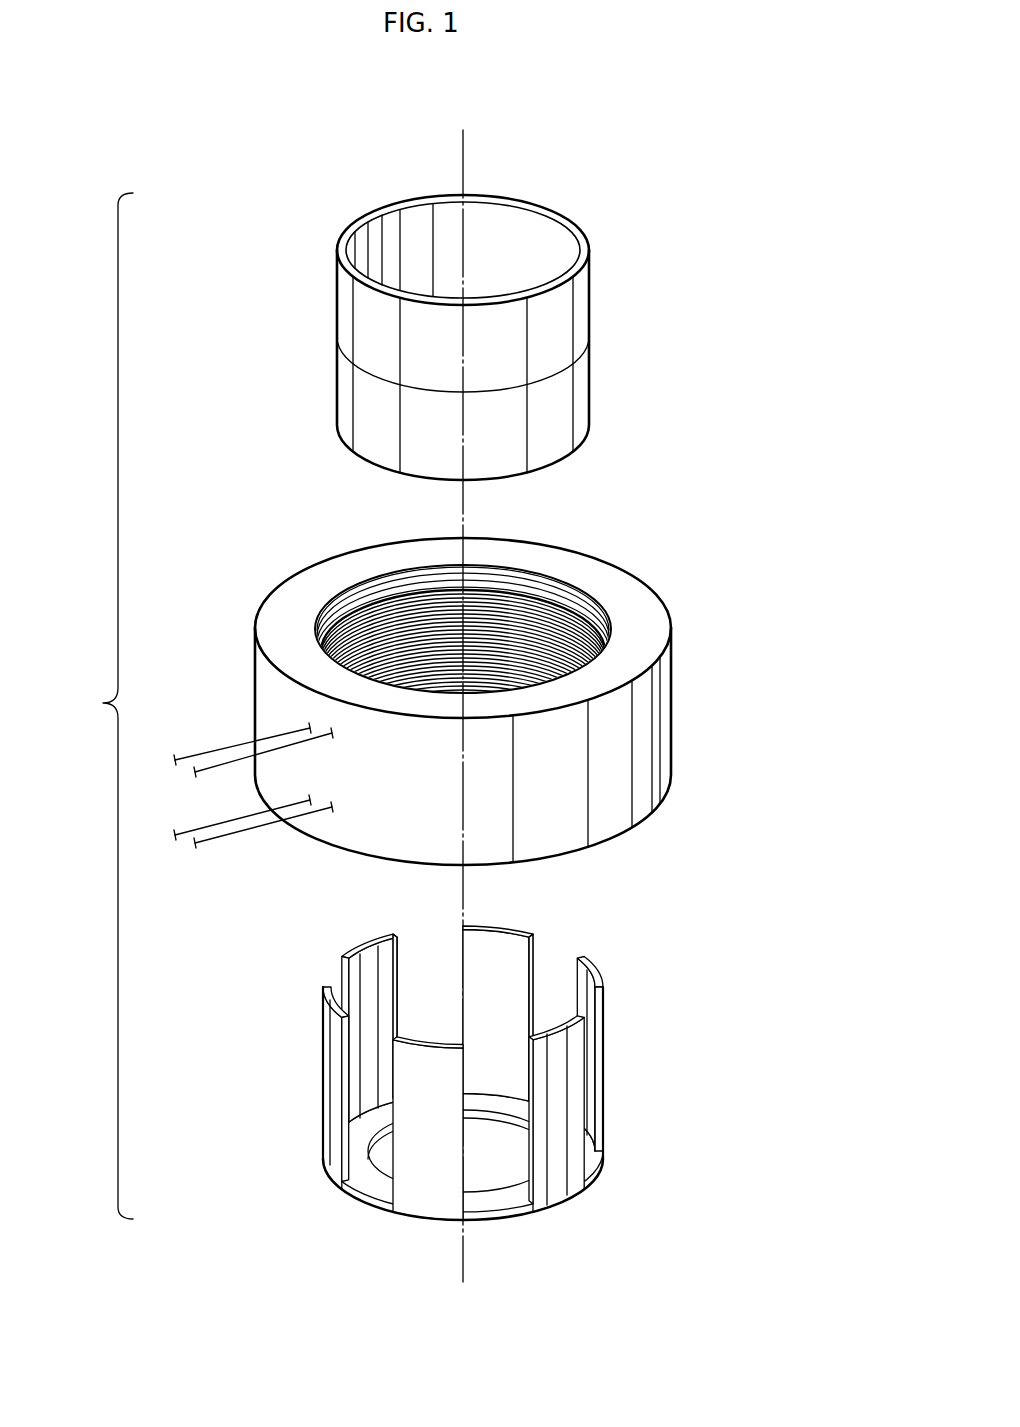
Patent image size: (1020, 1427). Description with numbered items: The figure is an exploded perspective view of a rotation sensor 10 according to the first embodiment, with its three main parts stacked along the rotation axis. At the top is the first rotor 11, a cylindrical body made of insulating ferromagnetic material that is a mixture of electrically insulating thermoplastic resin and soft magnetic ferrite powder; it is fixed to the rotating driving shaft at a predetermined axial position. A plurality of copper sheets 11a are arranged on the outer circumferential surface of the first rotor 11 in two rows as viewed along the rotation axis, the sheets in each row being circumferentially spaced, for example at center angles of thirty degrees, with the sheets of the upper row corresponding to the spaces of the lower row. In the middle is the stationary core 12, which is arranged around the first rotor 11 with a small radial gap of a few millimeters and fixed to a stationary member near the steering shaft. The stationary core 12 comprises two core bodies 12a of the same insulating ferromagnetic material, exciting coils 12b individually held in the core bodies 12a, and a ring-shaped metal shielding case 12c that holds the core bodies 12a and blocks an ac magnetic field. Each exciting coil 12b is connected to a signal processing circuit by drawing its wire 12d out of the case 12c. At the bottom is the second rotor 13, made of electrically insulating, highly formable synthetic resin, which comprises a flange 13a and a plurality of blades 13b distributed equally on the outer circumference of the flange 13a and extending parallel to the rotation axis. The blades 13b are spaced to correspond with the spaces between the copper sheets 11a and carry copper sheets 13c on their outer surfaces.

The rotation sensor 10 is at (98, 706).
The first rotor 11 is at (594, 296).
The copper sheets 11a is at (386, 300).
The stationary core 12 is at (666, 597).
The core bodies 12a is at (547, 663).
The exciting coils 12b is at (428, 673).
The shielding case 12c is at (658, 708).
The wire 12d is at (207, 760).
The second rotor 13 is at (480, 1080).
The flange 13a is at (488, 1197).
The blades 13b is at (485, 953).
The copper sheets 13c is at (330, 1077).